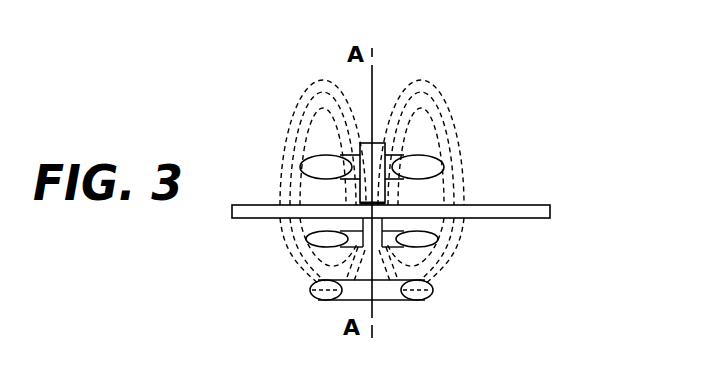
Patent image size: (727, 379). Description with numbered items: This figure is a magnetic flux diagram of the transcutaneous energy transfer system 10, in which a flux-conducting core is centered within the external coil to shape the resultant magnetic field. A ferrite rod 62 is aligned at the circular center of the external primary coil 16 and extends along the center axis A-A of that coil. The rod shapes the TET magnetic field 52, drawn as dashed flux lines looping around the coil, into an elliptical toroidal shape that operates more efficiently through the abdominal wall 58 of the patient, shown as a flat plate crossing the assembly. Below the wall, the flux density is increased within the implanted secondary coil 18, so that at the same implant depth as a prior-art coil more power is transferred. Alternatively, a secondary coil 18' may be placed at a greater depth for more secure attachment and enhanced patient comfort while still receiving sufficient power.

The transcutaneous energy transfer (TET) system 10 is at (540, 104).
The primary coil 16 is at (444, 160).
The secondary coil 18 is at (400, 258).
The secondary coil 18' is at (406, 310).
The TET magnetic field 52 is at (440, 244).
The abdominal wall 58 is at (517, 204).
The ferrite rod 62 is at (386, 157).